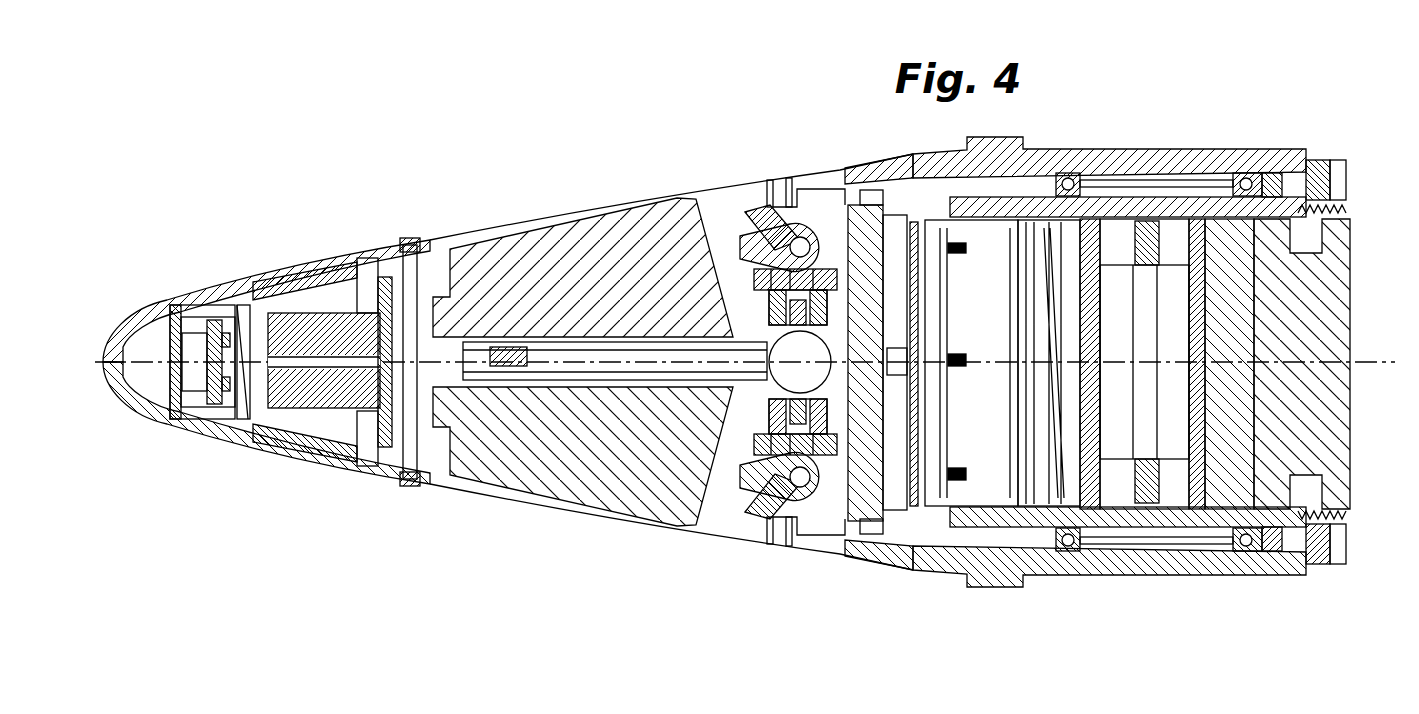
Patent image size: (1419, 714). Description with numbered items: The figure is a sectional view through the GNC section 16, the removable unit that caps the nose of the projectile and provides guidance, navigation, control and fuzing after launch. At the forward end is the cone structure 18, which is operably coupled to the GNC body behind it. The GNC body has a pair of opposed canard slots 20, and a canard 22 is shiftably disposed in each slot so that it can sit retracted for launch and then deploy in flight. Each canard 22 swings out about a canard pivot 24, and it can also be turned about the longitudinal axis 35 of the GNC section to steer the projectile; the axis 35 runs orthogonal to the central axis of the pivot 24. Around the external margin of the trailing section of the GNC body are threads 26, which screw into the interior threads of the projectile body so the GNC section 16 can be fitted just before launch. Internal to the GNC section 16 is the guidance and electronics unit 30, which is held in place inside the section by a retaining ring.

The GNC section 16 is at (566, 102).
The cone structure 18 is at (268, 280).
The canard slots 20 is at (528, 223).
The canard 22 is at (493, 258).
The canard pivot 24 is at (803, 236).
The threads 26 is at (1223, 570).
The guidance and electronics unit 30 is at (983, 491).
The longitudinal axis 35 is at (1368, 364).